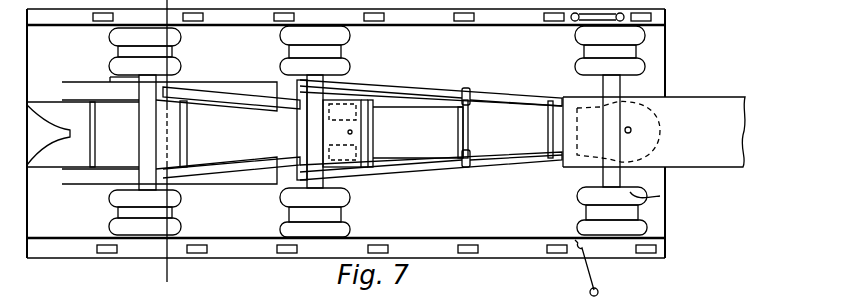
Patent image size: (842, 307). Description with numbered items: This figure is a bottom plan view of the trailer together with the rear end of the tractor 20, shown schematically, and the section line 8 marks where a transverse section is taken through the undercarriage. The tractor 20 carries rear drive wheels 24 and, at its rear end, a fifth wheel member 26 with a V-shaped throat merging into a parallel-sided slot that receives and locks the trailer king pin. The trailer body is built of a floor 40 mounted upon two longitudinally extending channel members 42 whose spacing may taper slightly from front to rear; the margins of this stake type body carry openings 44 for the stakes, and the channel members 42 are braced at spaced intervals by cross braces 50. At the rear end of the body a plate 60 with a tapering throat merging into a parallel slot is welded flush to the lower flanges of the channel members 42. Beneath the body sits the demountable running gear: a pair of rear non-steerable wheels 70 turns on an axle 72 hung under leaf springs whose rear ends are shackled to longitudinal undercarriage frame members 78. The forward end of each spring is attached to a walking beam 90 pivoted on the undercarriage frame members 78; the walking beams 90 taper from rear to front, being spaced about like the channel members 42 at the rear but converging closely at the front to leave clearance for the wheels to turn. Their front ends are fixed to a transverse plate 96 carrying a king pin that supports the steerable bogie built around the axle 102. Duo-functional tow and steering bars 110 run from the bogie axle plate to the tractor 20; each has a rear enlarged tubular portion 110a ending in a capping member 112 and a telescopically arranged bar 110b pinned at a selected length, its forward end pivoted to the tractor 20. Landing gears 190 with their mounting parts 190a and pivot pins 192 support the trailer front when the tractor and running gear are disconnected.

The section line 8- 8 is at (173, 41).
The tractor 20 is at (718, 105).
The rear drive wheels 24 is at (660, 196).
The fifth wheel member 26 is at (650, 115).
The floor 40 is at (508, 222).
The channel members 42 is at (408, 102).
The openings 44 is at (378, 22).
The cross braces 50 is at (186, 141).
The plate 60 is at (73, 158).
The rear non-steerable wheels 70 is at (181, 64).
The axle 72 is at (139, 128).
The undercarriage frame members 78 is at (236, 81).
The walking beams 90 is at (250, 178).
The transverse plate 96 is at (297, 128).
The axle 102 is at (322, 142).
The tow and steering bars 110 is at (400, 81).
The rear enlarged tubular portion 110a is at (438, 91).
The telescopically arranged bar 110b is at (519, 96).
The capping member 112 is at (466, 94).
The landing gears 190 is at (584, 265).
The link 190a is at (585, 15).
The pivot pin 192 is at (622, 20).